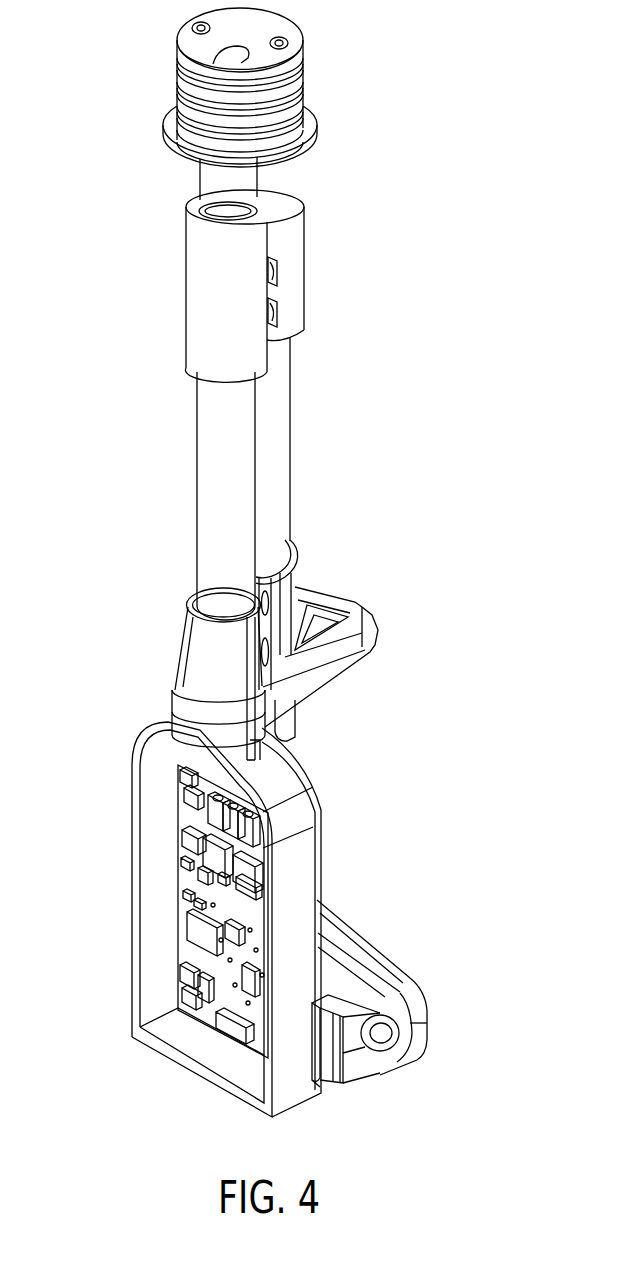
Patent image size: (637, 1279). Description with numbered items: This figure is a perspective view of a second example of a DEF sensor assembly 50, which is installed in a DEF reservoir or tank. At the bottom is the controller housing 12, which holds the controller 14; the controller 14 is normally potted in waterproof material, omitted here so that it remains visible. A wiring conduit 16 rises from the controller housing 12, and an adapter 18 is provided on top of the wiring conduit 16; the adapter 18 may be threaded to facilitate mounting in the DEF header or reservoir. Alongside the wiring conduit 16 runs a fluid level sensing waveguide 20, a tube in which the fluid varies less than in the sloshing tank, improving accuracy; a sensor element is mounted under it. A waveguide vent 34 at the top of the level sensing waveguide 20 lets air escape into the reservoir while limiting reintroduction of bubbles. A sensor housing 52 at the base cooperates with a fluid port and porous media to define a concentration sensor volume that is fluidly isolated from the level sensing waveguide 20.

The controller housing 12 is at (147, 945).
The controller 14 is at (187, 847).
The wiring conduit 16 is at (205, 523).
The adapter 18 is at (176, 110).
The fluid level sensing waveguide 20 is at (273, 490).
The waveguide vent 34 is at (282, 197).
The DEF sensor assembly 50 is at (505, 596).
The sensor housing 52 is at (327, 977).